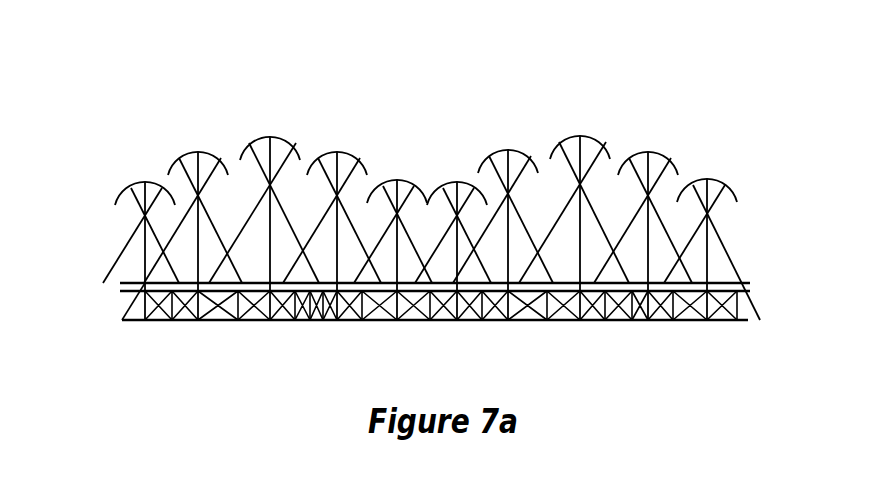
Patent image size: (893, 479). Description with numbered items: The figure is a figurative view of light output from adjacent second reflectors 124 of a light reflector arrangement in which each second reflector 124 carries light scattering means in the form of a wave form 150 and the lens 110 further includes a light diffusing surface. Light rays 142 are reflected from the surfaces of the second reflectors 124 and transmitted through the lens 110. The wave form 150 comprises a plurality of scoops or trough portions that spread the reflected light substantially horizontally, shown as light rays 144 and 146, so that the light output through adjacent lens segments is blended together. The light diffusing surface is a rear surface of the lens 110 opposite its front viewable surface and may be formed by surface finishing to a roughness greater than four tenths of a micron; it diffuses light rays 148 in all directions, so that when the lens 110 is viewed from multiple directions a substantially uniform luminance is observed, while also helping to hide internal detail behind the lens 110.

The lens 110 is at (137, 295).
The second reflector 124 is at (406, 172).
The light rays 142 is at (281, 145).
The light rays 144 is at (248, 208).
The light rays 146 is at (280, 210).
The light rays 148 is at (425, 332).
The wave form 150 is at (133, 178).